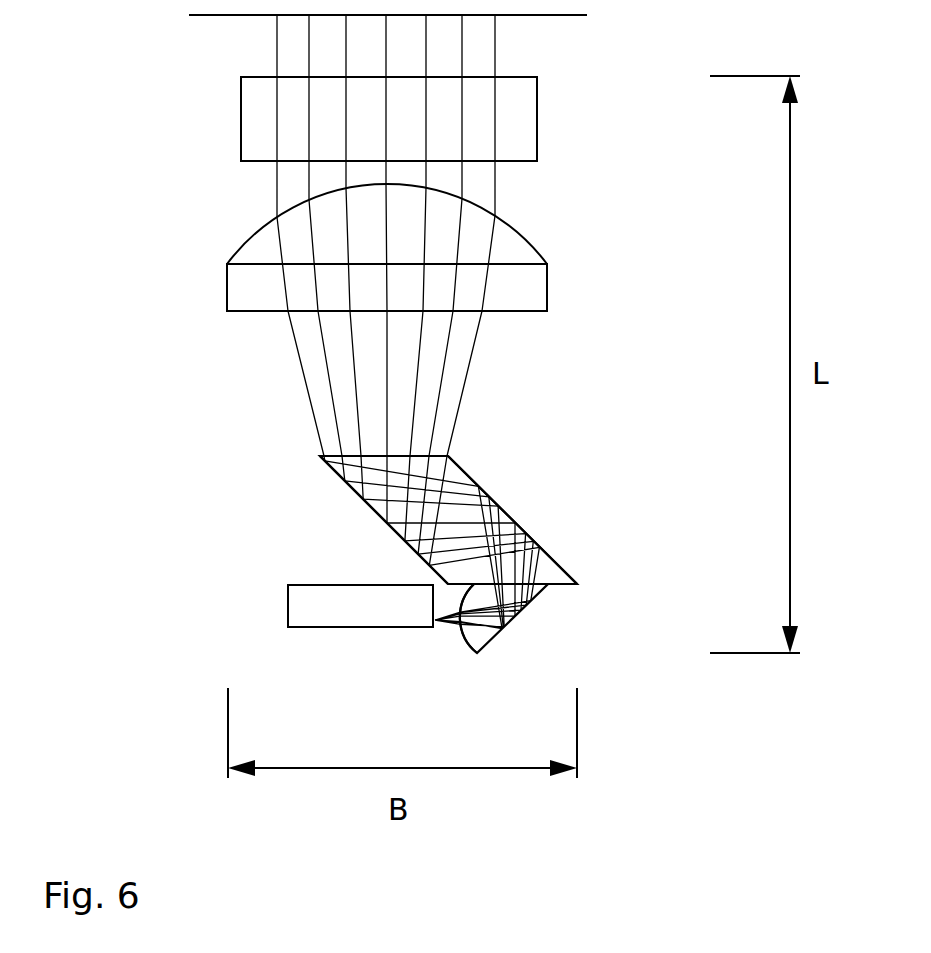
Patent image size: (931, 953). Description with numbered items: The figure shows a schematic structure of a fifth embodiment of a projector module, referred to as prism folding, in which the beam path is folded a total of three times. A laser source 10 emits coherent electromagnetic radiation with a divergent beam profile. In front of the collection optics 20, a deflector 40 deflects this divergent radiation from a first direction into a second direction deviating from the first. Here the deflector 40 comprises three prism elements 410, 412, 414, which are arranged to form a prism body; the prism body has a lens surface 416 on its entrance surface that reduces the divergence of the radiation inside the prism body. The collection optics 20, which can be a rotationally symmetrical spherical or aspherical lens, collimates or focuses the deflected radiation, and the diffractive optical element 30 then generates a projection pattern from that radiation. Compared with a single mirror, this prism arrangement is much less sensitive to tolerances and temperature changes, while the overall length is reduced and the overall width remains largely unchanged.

The laser source 10 is at (347, 600).
The collection optics 20 is at (513, 293).
The diffractive optical element 30 is at (513, 125).
The deflector 40 is at (552, 567).
The prism element 410 is at (350, 491).
The prism element 412 is at (497, 495).
The prism element 414 is at (486, 651).
The lens surface 416 is at (463, 642).